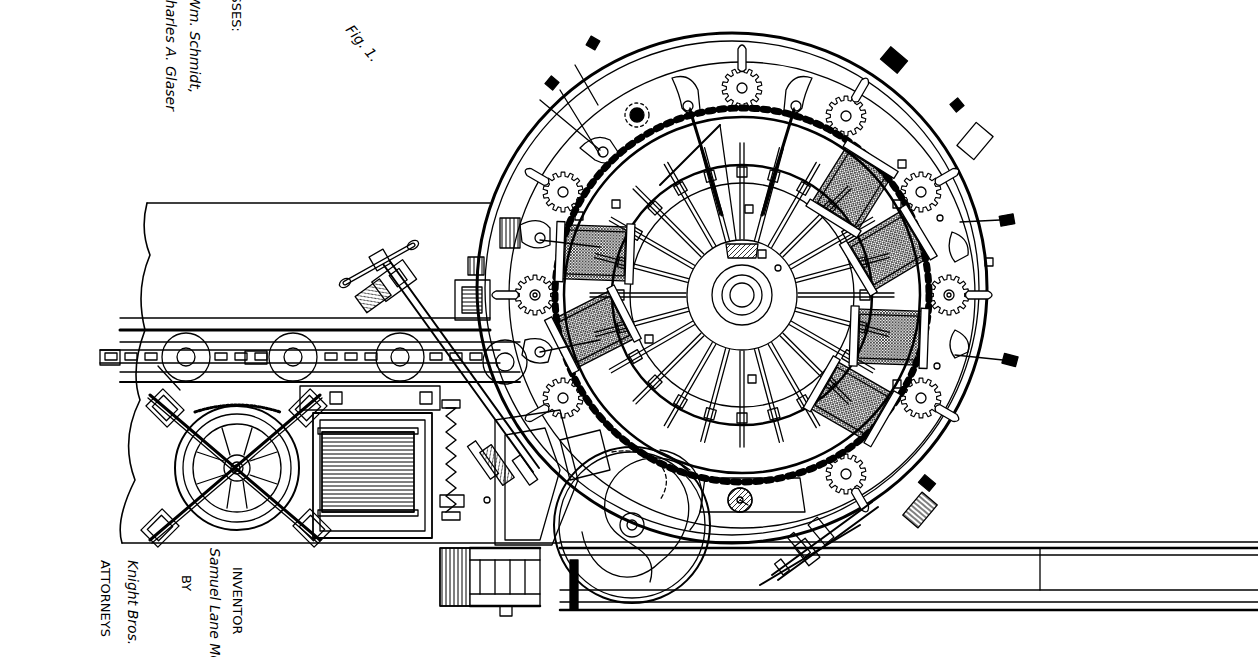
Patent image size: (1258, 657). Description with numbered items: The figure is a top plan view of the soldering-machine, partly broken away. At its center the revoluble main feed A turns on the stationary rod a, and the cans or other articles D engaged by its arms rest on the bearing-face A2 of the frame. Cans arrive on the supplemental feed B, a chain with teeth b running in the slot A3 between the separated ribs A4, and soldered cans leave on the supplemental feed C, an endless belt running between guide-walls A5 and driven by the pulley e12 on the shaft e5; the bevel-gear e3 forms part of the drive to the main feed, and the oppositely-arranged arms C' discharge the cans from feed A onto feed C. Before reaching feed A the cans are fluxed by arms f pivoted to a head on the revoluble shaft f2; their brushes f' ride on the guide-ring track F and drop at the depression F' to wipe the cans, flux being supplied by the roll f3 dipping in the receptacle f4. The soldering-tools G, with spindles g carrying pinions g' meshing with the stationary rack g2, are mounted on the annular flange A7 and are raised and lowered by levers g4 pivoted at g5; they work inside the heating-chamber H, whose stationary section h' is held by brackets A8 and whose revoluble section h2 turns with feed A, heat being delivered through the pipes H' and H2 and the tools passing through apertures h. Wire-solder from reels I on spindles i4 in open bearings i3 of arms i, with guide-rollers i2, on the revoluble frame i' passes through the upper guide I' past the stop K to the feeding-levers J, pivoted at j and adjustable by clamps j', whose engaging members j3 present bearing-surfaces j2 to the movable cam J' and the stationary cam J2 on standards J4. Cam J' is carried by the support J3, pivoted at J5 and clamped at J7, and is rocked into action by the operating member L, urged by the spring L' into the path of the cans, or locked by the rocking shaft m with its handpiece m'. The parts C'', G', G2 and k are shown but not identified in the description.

The main feed A is at (684, 148).
The bearing-face A2 is at (630, 80).
The slot A3 is at (258, 350).
The separated ribs A4 is at (226, 350).
The guide-walls A5 is at (1045, 560).
The frame or annular flange A7 is at (700, 80).
The brackets A8 is at (500, 232).
The supplemental feed B is at (112, 353).
The supplemental feed C is at (909, 576).
The discharging arms C' is at (632, 528).
The cam blade C'' is at (681, 490).
The cans or other articles D is at (188, 340).
The track or support F is at (229, 468).
The depression F' is at (237, 401).
The feeding members or arms f is at (235, 469).
The brushes f' is at (233, 488).
The revoluble shaft f2 is at (237, 475).
The roll f3 is at (366, 490).
The receptacle f4 is at (395, 538).
The soldering-tools G is at (752, 495).
The stop block G' is at (744, 295).
The pinion G2 is at (540, 192).
The spindles g is at (640, 71).
The pinions g' is at (732, 267).
The stationary gear or rack g2 is at (748, 118).
The levers g4 is at (744, 80).
The pivot g5 is at (694, 288).
The heating-chamber H is at (664, 315).
The fuel and air-conducting pipe H' is at (705, 553).
The fuel and air-conducting pipe H2 is at (765, 585).
The apertures h is at (754, 498).
The stationary section h' is at (777, 327).
The revoluble section h2 is at (640, 122).
The reels I is at (742, 295).
The upper guide I' is at (705, 274).
The arms i is at (949, 212).
The revoluble frame i' is at (757, 320).
The guide-rollers i2 is at (761, 394).
The open bearings i3 is at (775, 292).
The spindles i4 is at (740, 210).
The feeding-levers J is at (741, 293).
The cam J' is at (585, 465).
The cam J2 is at (985, 170).
The movable support J3 is at (505, 480).
The stationary standards or supports J4 is at (455, 298).
The pivot J5 is at (524, 490).
The clamp J7 is at (483, 484).
The pivot j is at (762, 259).
The clamps j' is at (724, 290).
The bearing-surfaces j2 is at (953, 483).
The engaging members j3 is at (749, 376).
The stop K is at (595, 160).
The pivot pin k is at (714, 362).
The operating member L is at (370, 398).
The spring L' is at (453, 460).
The rocking shaft m is at (446, 366).
The handpiece m' is at (379, 253).
The stationary rod or bar a is at (742, 305).
The teeth b is at (166, 348).
The bevel-gear e3 is at (620, 525).
The shaft e5 is at (506, 616).
The pulley e12 is at (470, 606).